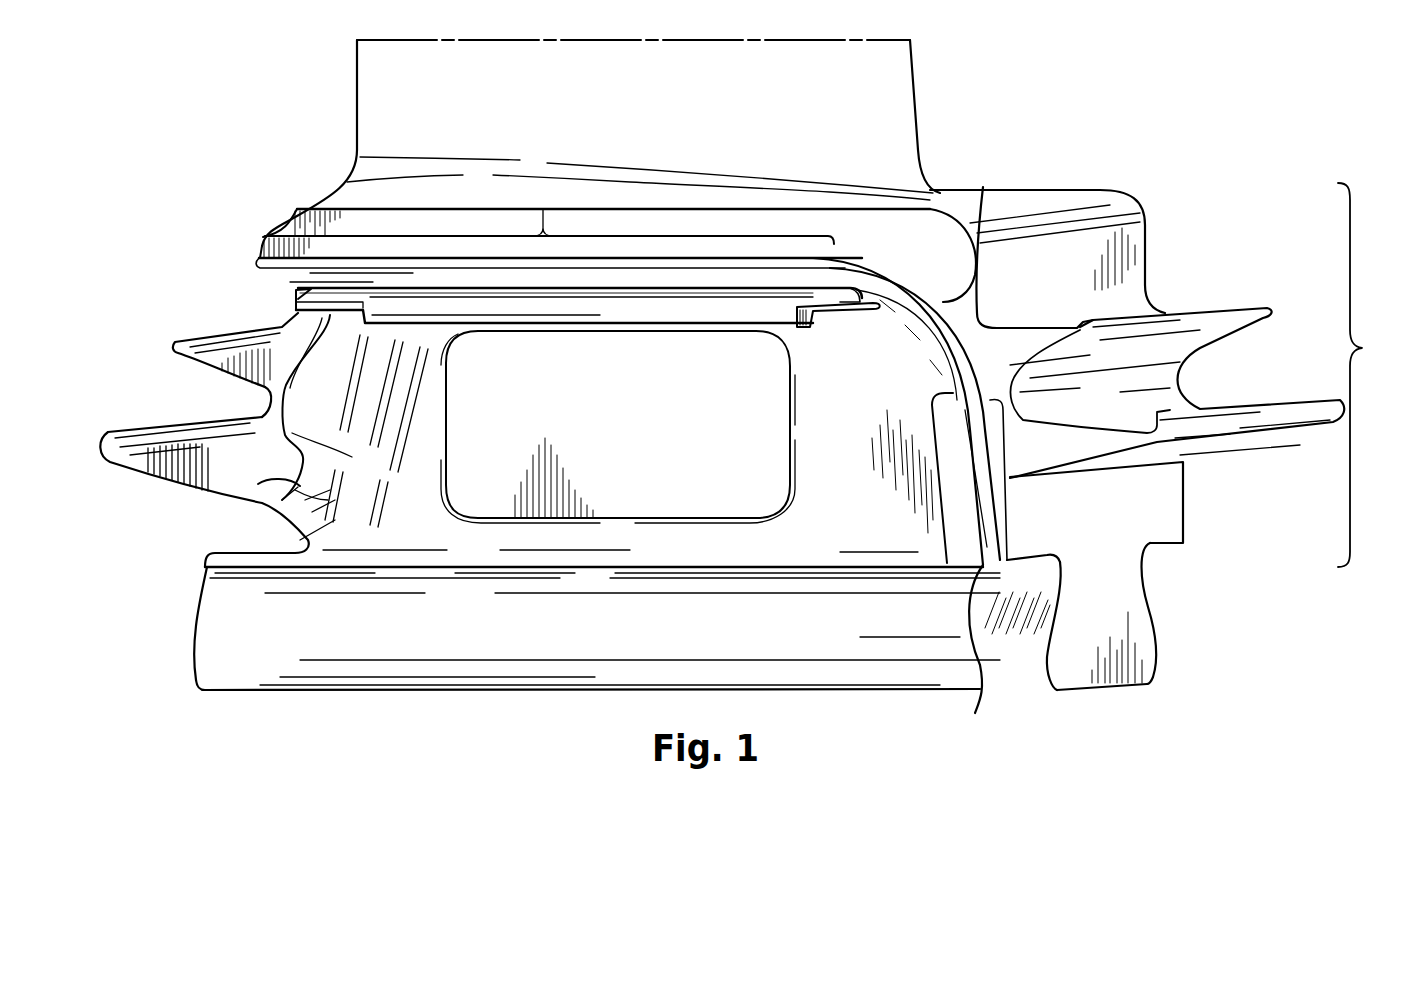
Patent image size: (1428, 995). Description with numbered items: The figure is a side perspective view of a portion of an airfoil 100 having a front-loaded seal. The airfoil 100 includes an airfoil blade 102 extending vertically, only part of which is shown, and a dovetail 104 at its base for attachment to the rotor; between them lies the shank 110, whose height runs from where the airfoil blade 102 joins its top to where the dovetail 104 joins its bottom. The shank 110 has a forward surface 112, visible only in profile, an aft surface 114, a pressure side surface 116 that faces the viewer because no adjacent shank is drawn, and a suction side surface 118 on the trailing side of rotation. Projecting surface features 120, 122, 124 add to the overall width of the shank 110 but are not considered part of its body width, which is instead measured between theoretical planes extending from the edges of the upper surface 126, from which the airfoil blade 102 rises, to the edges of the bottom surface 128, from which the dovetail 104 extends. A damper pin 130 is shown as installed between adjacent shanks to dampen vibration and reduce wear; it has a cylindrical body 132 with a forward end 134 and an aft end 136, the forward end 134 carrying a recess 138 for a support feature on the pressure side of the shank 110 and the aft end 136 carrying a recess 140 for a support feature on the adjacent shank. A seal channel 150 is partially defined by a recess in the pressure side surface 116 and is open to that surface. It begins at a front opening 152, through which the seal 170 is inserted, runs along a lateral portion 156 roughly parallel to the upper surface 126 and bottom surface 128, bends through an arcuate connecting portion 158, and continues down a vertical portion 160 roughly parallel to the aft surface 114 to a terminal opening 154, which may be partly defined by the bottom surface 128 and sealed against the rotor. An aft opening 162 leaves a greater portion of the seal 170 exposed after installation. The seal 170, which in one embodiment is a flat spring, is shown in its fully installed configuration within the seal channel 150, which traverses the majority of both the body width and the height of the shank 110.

The airfoil 100 is at (168, 178).
The airfoil blade 102 is at (367, 128).
The dovetail 104 is at (1147, 633).
The shank 110 is at (1373, 375).
The forward surface 112 is at (260, 250).
The aft surface 114 is at (1142, 268).
The pressure side surface 116 is at (262, 482).
The suction side surface 118 is at (1183, 500).
The projecting surface feature 120 is at (202, 353).
The projecting surface feature 122 is at (142, 462).
The projecting surface feature 124 is at (1220, 323).
The upper surface 126 is at (1060, 200).
The bottom surface 128 is at (1170, 543).
The damper pin 130 is at (553, 307).
The cylindrical body 132 is at (463, 303).
The forward end 134 is at (296, 298).
The aft end 136 is at (863, 293).
The recess 138 is at (268, 395).
The recess 140 is at (833, 307).
The seal channel 150 is at (293, 260).
The front opening 152 is at (260, 268).
The terminal opening 154 is at (997, 653).
The lateral portion 156 is at (542, 207).
The connecting portion 158 is at (943, 300).
The vertical portion 160 is at (1010, 450).
The aft opening 162 is at (975, 290).
The seal 170 is at (960, 330).